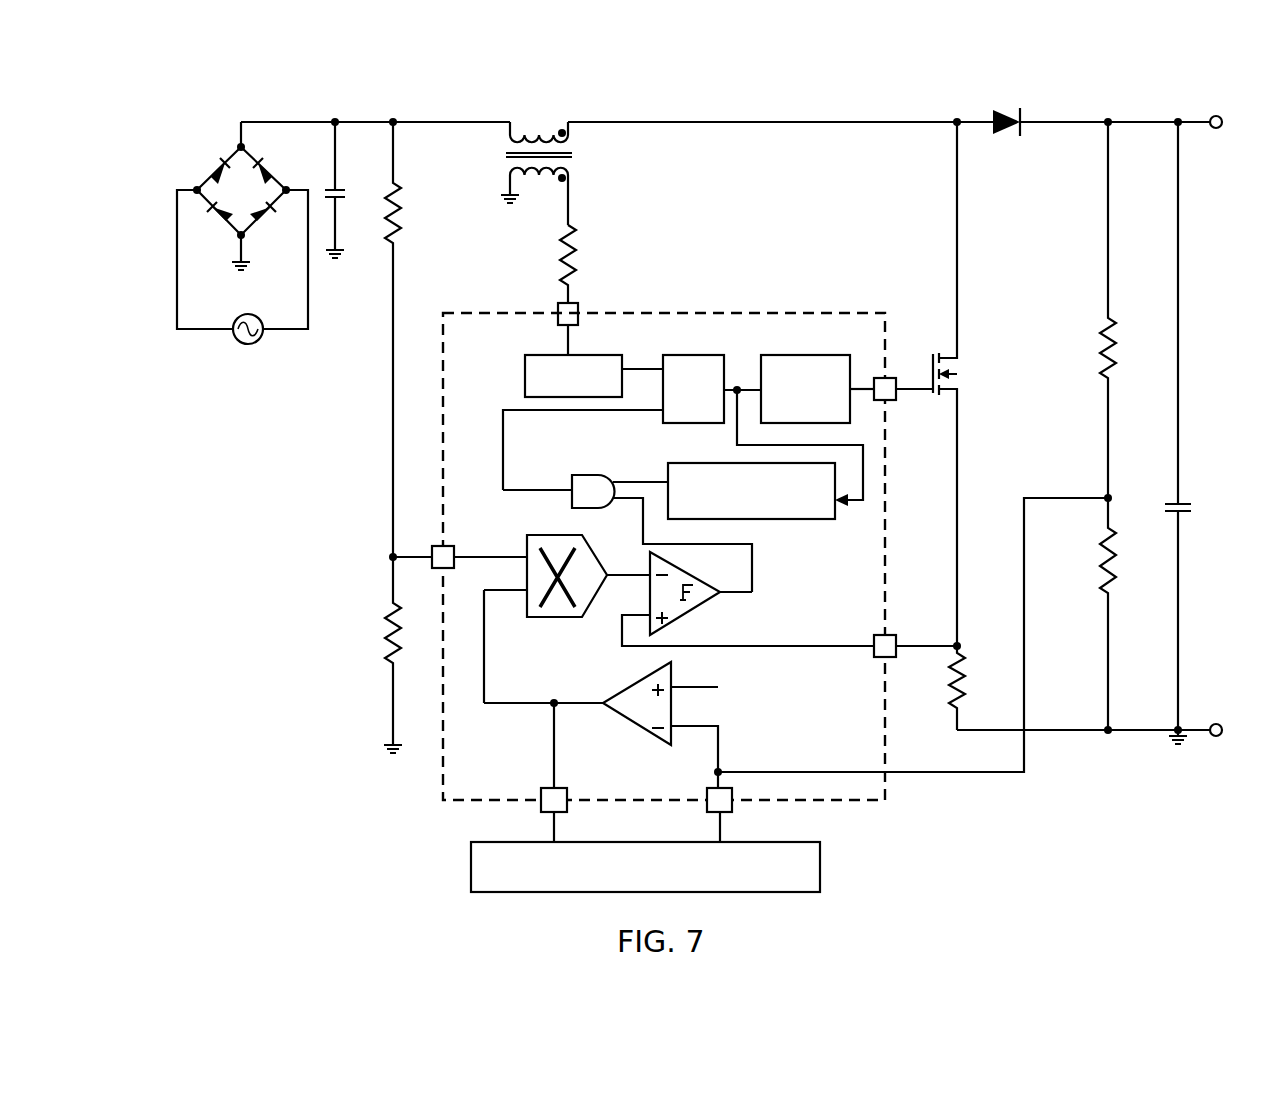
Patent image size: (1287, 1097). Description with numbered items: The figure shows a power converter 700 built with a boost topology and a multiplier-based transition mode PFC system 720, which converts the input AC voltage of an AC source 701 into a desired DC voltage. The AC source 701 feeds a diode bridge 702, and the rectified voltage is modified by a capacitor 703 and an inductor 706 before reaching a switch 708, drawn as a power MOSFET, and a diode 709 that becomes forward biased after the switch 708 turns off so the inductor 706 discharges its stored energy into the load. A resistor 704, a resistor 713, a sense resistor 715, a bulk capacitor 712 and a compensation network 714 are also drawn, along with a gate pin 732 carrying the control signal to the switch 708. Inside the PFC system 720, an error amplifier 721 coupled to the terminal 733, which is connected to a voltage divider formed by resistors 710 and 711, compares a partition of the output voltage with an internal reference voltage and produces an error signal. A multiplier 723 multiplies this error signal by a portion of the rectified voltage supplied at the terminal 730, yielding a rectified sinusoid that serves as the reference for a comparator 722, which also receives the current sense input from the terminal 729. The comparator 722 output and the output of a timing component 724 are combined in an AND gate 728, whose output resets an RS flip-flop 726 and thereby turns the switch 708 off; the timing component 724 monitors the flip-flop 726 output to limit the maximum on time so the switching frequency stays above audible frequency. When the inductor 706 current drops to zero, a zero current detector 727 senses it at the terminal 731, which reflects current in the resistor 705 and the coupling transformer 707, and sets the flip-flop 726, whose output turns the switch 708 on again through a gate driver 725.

The power converter 700 is at (1088, 86).
The AC source 701 is at (240, 345).
The diode bridge 702 is at (215, 158).
The capacitor 703 is at (340, 204).
The resistor R1a 704 is at (403, 244).
The resistor 705 is at (586, 248).
The inductor 706 is at (572, 131).
The coupling transformer 707 is at (575, 163).
The switch 708 is at (958, 346).
The diode 709 is at (972, 138).
The resistor 710 is at (1118, 356).
The resistor 711 is at (1118, 569).
The bulk capacitor Cbulk 712 is at (1190, 491).
The resistor R1b 713 is at (385, 652).
The compensation network 714 is at (820, 883).
The sense resistor Rs 715 is at (963, 686).
The PFC system 720 is at (880, 802).
The error amplifier 721 is at (656, 742).
The comparator 722 is at (703, 598).
The multiplier 723 is at (585, 622).
The timing component 724 is at (806, 520).
The gate driver 725 is at (768, 355).
The RS flip-flop 726 is at (670, 355).
The zero current detector 727 is at (574, 355).
The AND gate 728 is at (598, 470).
The terminal 729 is at (888, 632).
The terminal 730 is at (445, 545).
The terminal 731 is at (582, 306).
The gate drive pin 732 is at (885, 376).
The terminal 733 is at (1112, 478).